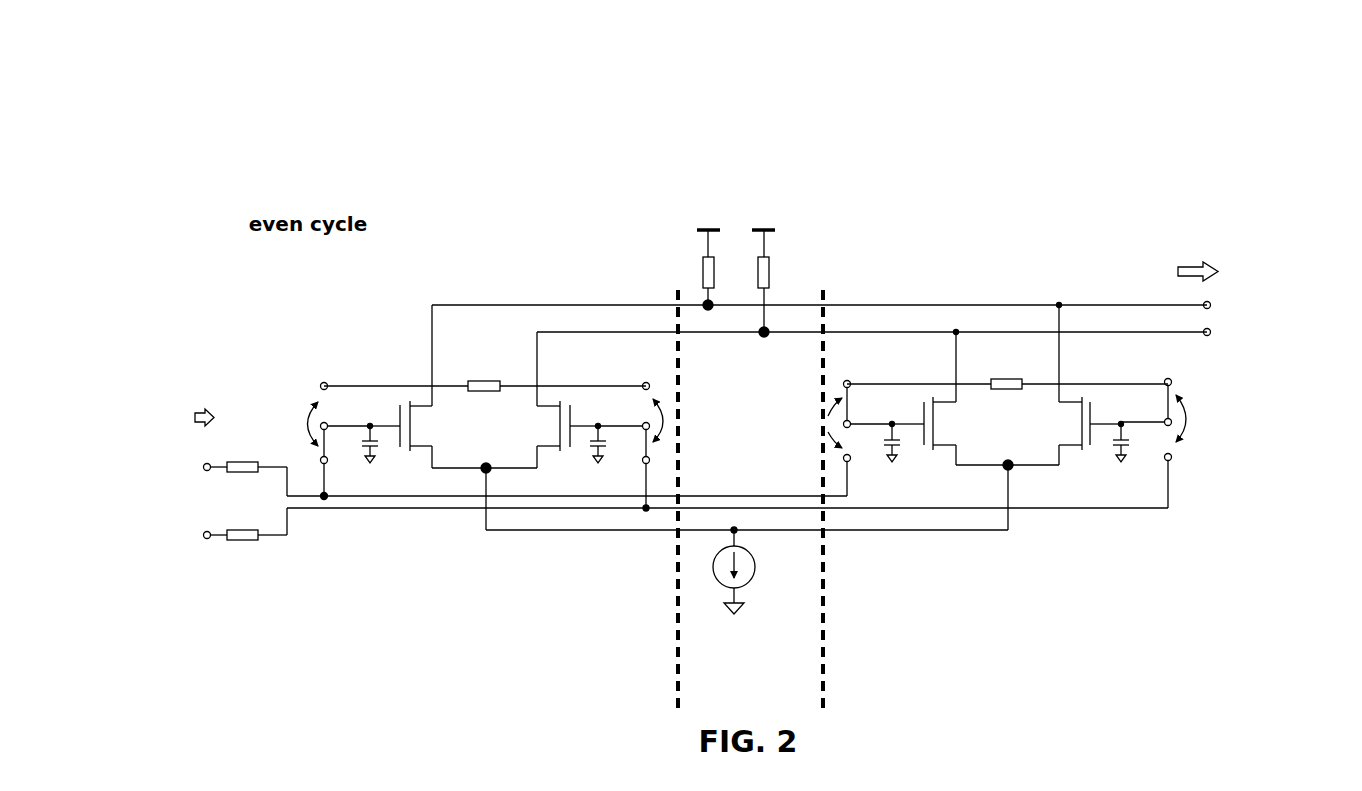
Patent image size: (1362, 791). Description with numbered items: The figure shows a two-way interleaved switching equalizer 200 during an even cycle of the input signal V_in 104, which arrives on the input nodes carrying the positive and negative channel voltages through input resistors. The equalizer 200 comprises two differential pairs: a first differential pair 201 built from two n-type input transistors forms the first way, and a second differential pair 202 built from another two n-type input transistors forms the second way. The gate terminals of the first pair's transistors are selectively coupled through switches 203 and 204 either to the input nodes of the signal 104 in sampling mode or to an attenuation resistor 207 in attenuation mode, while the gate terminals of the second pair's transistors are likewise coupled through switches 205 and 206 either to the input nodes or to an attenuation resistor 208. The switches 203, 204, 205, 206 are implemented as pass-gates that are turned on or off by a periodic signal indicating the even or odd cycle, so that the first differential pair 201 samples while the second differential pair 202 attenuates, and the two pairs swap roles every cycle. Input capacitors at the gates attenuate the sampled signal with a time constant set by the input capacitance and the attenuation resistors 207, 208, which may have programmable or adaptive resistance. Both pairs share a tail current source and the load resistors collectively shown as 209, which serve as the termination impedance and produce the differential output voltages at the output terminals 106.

The two-way interleaved switching equalizer 200 is at (766, 80).
The first differential pair 201 is at (449, 502).
The second differential pair 202 is at (1035, 471).
The switch 203 is at (321, 422).
The switch 204 is at (654, 444).
The switch 205 is at (844, 424).
The switch 206 is at (1172, 416).
The attenuation resistor 207 is at (470, 379).
The attenuation resistor 208 is at (988, 379).
The output resistors 209 is at (757, 258).
The input signal V_in 104 is at (173, 506).
The output terminals 106 is at (1217, 315).